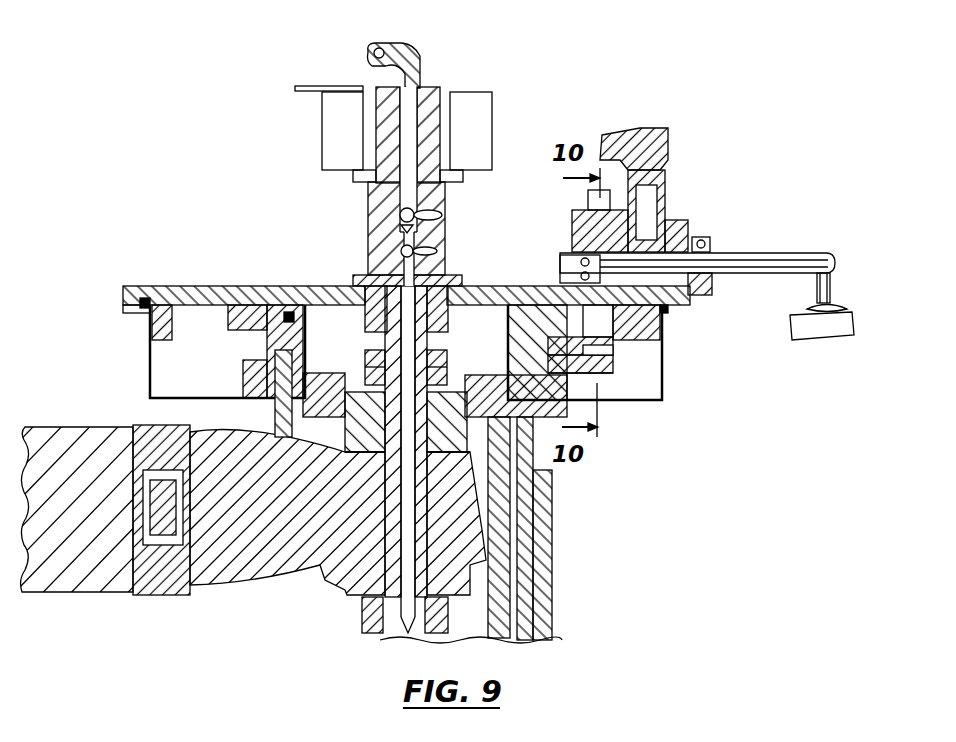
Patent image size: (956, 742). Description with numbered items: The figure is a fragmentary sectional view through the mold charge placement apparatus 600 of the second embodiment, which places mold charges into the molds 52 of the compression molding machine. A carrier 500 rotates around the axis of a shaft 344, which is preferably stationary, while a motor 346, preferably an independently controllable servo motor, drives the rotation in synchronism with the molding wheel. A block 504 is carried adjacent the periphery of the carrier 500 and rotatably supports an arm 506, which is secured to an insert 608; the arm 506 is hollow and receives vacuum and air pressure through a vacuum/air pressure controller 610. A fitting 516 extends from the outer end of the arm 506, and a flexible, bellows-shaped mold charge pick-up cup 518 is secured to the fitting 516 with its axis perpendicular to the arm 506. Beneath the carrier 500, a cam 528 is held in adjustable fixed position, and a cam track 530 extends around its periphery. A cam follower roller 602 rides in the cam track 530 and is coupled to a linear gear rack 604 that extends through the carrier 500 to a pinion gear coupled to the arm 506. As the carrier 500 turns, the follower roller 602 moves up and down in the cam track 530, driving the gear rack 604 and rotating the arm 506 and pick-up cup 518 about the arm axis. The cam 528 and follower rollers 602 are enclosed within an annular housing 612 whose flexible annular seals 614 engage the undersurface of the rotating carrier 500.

The mold charge placement apparatus 600 is at (616, 88).
The vacuum/air pressure controller 610 is at (668, 152).
The block 504 is at (678, 238).
The insert 608 is at (595, 265).
The arm 506 is at (760, 252).
The fitting 516 is at (832, 280).
The mold charge pick-up cup 518 is at (812, 308).
The mold 52 is at (802, 328).
The carrier 500 is at (488, 297).
The flexible annular seal 614 is at (145, 305).
The annular housing 612 is at (150, 352).
The cam 528 is at (560, 392).
The linear gear rack 604 is at (605, 327).
The cam follower roller 602 is at (572, 362).
The cam track 530 is at (570, 372).
The motor 346 is at (78, 575).
The shaft 344 is at (385, 605).